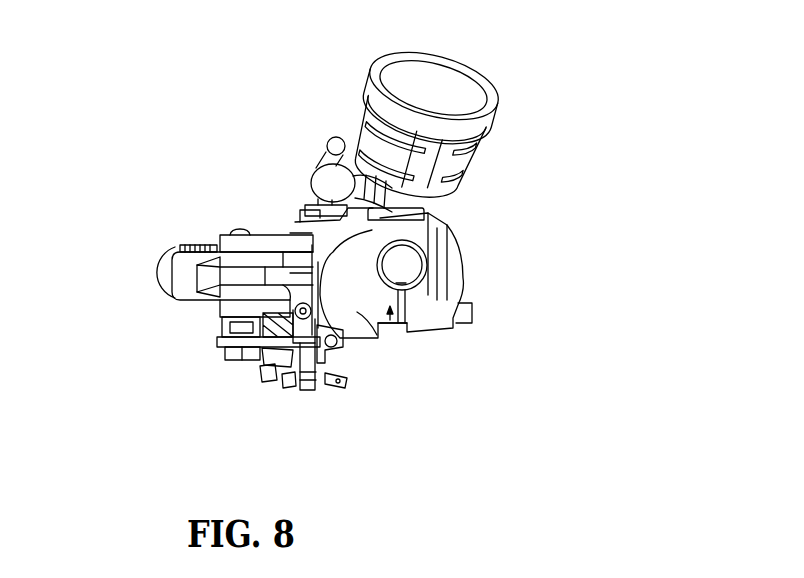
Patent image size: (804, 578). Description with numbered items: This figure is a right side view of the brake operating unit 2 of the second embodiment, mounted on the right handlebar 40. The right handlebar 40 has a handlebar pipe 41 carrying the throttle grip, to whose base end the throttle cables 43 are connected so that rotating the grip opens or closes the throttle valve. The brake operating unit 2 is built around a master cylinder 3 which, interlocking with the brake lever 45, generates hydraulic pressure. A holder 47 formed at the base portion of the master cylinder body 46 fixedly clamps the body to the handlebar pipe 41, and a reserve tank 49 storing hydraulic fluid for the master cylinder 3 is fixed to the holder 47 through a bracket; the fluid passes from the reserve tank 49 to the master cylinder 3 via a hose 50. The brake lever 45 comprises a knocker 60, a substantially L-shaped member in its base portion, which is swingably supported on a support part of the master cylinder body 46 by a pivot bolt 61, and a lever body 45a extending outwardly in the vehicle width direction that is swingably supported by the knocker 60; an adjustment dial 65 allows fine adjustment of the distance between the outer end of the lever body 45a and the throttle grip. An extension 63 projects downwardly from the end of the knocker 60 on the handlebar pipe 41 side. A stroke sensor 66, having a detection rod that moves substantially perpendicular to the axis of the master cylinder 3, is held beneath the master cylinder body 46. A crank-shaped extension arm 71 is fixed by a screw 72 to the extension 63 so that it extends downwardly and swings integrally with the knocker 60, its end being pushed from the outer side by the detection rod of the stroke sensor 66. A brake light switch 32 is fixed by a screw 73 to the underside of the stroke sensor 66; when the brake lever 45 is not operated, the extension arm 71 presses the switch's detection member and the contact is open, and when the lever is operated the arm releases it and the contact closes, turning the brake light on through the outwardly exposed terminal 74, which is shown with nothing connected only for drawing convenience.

The right handlebar 40 is at (578, 92).
The reserve tank 49 is at (445, 78).
The throttle cables 43 is at (324, 156).
The hose 50 is at (313, 175).
The master cylinder 3 is at (393, 322).
The handlebar pipe 41 is at (425, 256).
The holder 47 is at (417, 307).
The master cylinder body 46 is at (360, 314).
The knocker 60 is at (208, 287).
The lever body 45a is at (175, 263).
The brake lever 45 is at (170, 284).
The brake operating unit 2 is at (167, 298).
The adjustment dial 65 is at (205, 246).
The pivot bolt 61 is at (242, 232).
The stroke sensor 66 is at (265, 352).
The screw 72 is at (311, 312).
The extension 63 is at (335, 344).
The screw 73 is at (272, 368).
The brake light switch 32 is at (283, 388).
The extension arm 71 is at (308, 392).
The terminal 74 is at (340, 388).